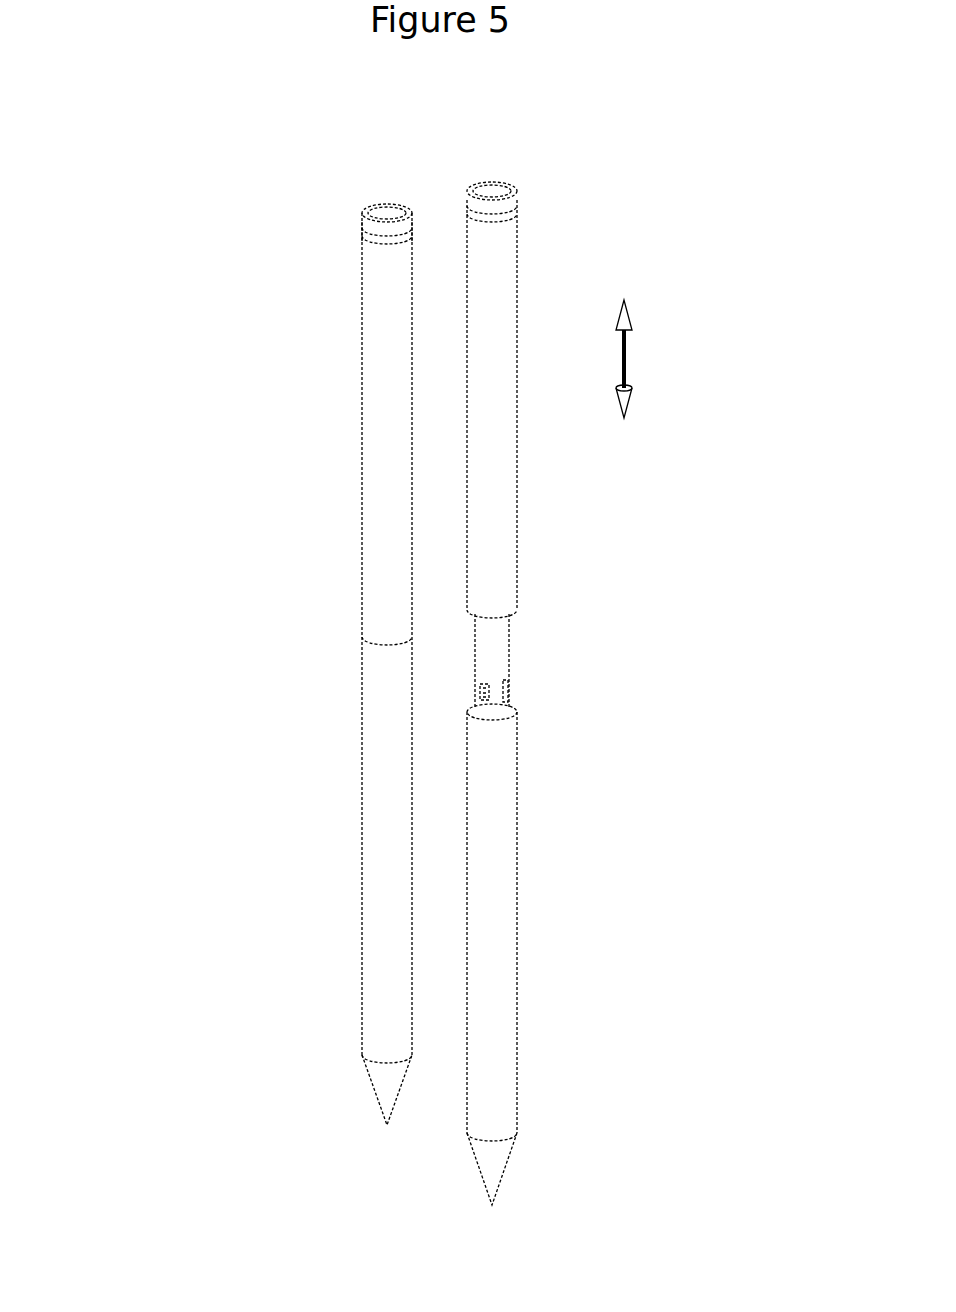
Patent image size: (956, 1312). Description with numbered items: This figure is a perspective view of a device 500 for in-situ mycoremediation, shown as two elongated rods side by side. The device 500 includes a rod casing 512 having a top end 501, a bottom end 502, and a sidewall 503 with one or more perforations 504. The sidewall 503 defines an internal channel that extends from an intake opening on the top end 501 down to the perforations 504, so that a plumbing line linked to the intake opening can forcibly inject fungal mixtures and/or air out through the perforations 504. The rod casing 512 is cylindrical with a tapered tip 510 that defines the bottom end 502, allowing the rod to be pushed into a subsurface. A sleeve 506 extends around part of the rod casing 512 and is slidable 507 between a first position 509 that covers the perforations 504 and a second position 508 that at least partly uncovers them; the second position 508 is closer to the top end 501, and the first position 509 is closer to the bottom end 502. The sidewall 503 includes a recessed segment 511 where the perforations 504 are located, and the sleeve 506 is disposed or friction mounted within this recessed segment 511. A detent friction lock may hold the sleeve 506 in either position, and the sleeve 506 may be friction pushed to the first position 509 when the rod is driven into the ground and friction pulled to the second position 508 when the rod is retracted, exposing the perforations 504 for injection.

The device for in-situ mycoremediation 500 is at (197, 60).
The top end 501 is at (403, 160).
The bottom end 502 is at (383, 216).
The sidewall 503 is at (350, 882).
The perforations 504 is at (505, 690).
The sleeve 506 is at (510, 527).
The slidable movement of the sleeve 507 is at (637, 360).
The second position 508 is at (542, 732).
The first position 509 is at (340, 666).
The tapered tip 510 is at (388, 1078).
The recessed segment 511 is at (542, 624).
The rod casing 512 is at (380, 425).